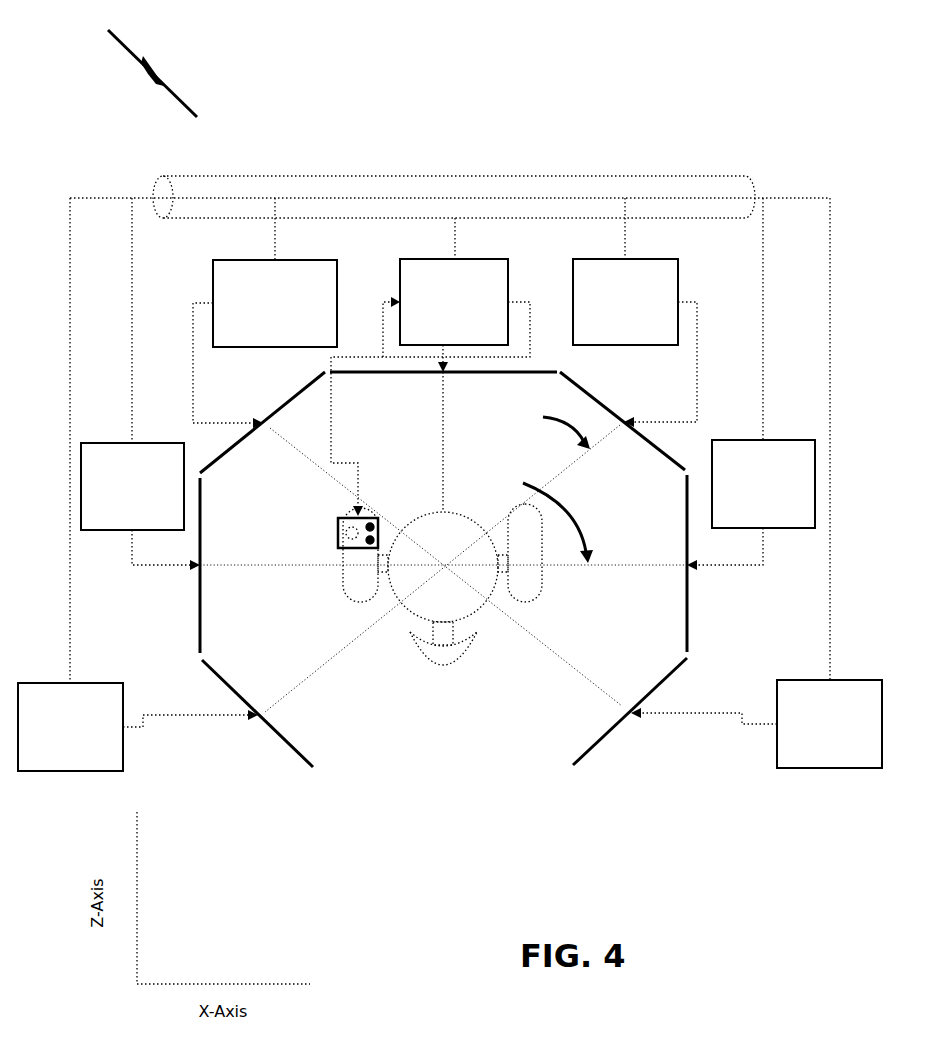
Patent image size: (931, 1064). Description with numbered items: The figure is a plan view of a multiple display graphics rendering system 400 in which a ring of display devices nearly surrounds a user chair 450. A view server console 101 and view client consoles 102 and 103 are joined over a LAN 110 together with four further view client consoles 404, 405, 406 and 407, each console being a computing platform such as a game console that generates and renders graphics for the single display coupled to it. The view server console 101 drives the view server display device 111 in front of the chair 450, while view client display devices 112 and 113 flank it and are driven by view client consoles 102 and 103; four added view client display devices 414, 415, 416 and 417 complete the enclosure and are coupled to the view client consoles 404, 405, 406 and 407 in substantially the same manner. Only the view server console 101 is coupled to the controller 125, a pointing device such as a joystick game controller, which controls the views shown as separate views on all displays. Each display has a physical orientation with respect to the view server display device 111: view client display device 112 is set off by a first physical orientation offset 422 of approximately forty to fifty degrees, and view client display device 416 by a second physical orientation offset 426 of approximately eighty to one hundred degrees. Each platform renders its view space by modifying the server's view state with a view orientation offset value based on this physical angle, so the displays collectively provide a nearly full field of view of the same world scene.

The multiple display graphics rendering system 400 is at (146, 62).
The LAN 110 is at (443, 211).
The view server console 101 is at (441, 341).
The view client console 102 is at (612, 341).
The view client console 103 is at (262, 342).
The view client console 404 is at (119, 525).
The view client console 405 is at (57, 765).
The view client console 406 is at (750, 522).
The view client console 407 is at (817, 762).
The view server display device 111 is at (418, 376).
The view client display device 112 is at (667, 466).
The view client display device 113 is at (252, 433).
The view client display device 414 is at (205, 598).
The view client display device 415 is at (287, 718).
The view client display device 416 is at (683, 633).
The view client display device 417 is at (590, 735).
The controller 125 is at (337, 535).
The first physical orientation offset 422 is at (456, 400).
The second physical orientation offset 426 is at (456, 470).
The user chair 450 is at (433, 617).